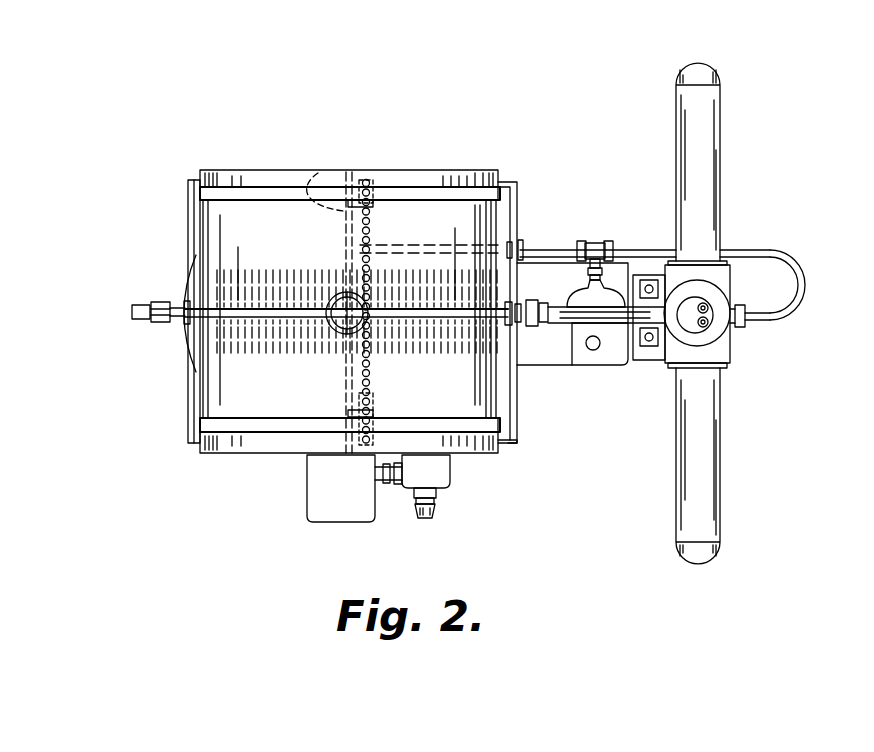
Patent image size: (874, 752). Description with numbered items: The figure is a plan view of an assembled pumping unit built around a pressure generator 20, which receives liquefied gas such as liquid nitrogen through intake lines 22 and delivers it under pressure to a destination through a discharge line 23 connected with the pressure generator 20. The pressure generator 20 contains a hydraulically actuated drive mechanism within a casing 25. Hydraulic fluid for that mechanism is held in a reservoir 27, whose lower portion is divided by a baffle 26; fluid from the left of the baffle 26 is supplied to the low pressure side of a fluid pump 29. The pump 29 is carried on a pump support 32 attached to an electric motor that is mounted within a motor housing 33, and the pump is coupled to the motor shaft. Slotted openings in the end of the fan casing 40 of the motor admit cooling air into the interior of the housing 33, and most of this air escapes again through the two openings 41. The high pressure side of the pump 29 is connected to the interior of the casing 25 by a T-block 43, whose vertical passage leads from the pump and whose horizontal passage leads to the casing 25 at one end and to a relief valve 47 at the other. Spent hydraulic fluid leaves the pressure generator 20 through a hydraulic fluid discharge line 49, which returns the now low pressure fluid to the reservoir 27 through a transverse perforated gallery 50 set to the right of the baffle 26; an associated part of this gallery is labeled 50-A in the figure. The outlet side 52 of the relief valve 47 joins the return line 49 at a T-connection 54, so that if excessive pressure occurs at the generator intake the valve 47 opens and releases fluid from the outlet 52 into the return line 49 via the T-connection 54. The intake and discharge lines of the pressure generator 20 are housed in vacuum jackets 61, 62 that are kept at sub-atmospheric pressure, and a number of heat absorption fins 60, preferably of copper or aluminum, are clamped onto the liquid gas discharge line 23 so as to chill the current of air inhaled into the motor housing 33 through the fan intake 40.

The pressure generator 20 is at (731, 358).
The intake lines 22 is at (713, 323).
The discharge line 23 is at (180, 305).
The casing 25 is at (723, 283).
The baffle 26 is at (318, 173).
The reservoir 27 is at (257, 172).
The fluid pump 29 is at (647, 352).
The pump support 32 is at (565, 362).
The motor housing 33 is at (512, 436).
The fan casing 40 is at (182, 330).
The openings 41 is at (194, 207).
The T-block 43 is at (640, 295).
The relief valve 47 is at (594, 350).
The hydraulic fluid discharge line 49 is at (527, 247).
The transverse perforated gallery 50 is at (380, 213).
The chain guide 50-A is at (398, 207).
The outlet side 52 is at (583, 288).
The T-connection 54 is at (597, 244).
The heat absorption fins 60 is at (263, 352).
The vacuum jacket 61 is at (677, 528).
The vacuum jacket 62 is at (708, 118).